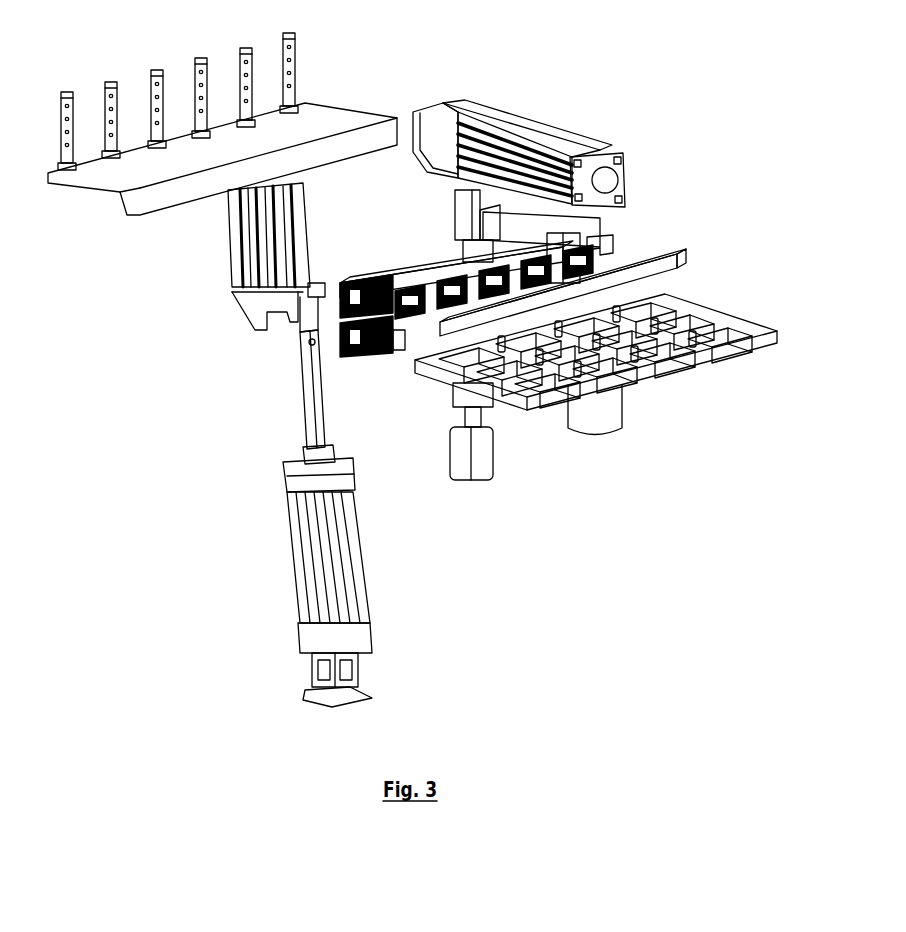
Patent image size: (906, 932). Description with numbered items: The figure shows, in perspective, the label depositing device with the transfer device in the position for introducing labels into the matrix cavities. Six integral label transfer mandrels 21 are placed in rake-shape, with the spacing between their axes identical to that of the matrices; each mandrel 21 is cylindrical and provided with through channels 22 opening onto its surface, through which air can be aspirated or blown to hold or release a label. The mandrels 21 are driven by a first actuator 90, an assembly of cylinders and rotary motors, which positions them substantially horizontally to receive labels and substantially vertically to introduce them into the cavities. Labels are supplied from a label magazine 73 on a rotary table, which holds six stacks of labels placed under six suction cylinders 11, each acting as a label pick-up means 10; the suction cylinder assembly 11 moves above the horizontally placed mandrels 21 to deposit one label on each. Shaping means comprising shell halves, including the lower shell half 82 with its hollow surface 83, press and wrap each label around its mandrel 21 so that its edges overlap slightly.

The label pick-up means 10 is at (641, 112).
The suction cylinder 11 is at (682, 277).
The label transfer mandrel 21 is at (150, 70).
The through channel 22 is at (140, 32).
The label magazine 73 is at (745, 300).
The lower shell half 82 is at (463, 270).
The hollow surface 83 is at (403, 337).
The first actuator 90 is at (222, 484).